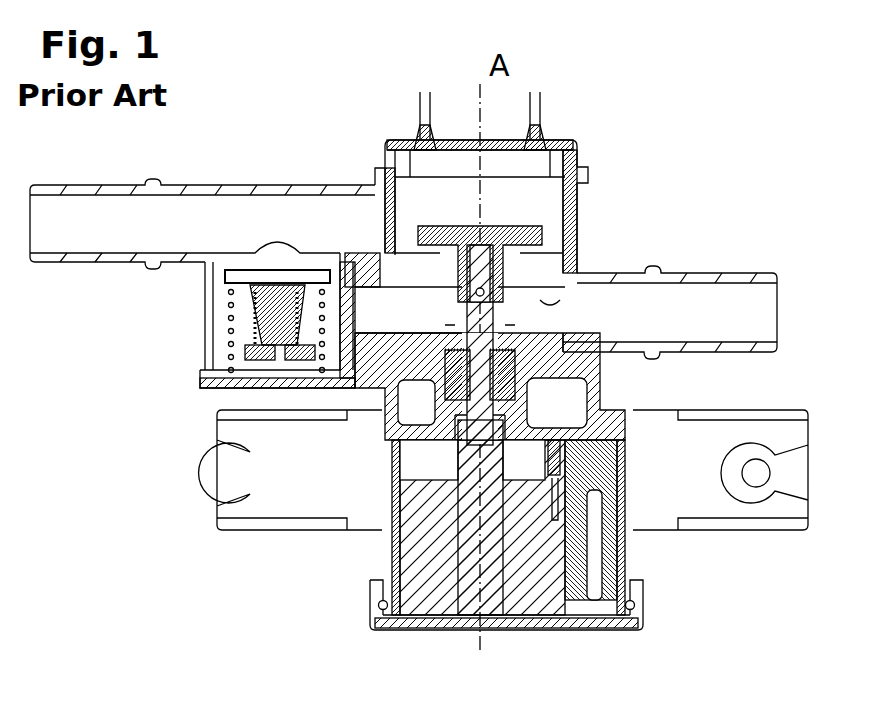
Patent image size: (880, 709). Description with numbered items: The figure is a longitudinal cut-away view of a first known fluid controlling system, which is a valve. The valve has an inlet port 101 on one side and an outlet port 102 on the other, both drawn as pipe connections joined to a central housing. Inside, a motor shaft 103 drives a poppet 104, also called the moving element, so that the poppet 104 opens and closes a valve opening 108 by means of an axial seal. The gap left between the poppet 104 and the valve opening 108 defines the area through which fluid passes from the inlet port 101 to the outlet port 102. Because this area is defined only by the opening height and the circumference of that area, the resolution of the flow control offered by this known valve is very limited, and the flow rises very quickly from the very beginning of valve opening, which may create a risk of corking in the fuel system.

The inlet port 101 is at (82, 222).
The outlet port 102 is at (745, 312).
The motor shaft 103 is at (462, 333).
The poppet 104 is at (378, 180).
The valve opening 108 is at (575, 308).